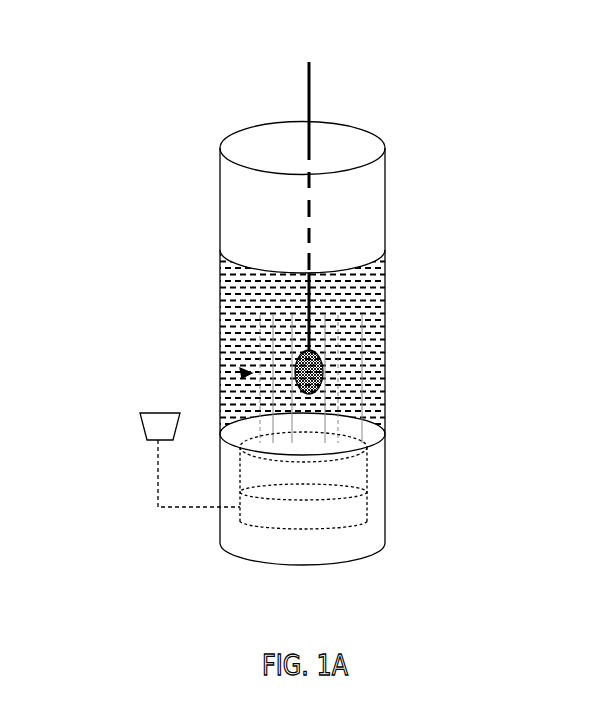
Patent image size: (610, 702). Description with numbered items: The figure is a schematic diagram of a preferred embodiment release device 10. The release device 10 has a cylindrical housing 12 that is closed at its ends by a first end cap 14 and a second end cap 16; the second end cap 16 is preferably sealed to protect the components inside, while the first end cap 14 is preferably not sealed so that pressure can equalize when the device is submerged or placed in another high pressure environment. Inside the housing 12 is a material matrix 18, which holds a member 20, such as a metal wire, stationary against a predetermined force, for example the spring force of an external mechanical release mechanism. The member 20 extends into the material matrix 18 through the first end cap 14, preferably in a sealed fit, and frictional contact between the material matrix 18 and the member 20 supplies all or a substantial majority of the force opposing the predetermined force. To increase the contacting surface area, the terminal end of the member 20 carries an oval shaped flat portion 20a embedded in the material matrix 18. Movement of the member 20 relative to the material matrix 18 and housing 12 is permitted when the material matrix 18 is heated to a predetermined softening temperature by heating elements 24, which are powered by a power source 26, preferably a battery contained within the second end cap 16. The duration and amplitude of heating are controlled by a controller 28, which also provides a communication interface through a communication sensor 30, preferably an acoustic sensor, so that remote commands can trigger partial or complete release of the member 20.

The release device 10 is at (484, 184).
The housing 12 is at (385, 368).
The first end cap 14 is at (387, 187).
The second end cap 16 is at (385, 534).
The material matrix 18 is at (365, 307).
The member 20 is at (313, 95).
The oval shaped flat portion 20a is at (297, 365).
The heating elements 24 is at (245, 373).
The power source 26 is at (345, 473).
The controller 28 is at (275, 527).
The communication sensor 30 is at (143, 422).